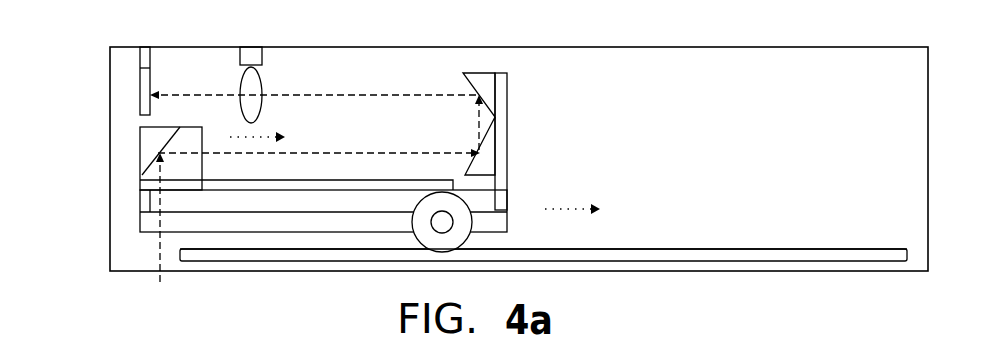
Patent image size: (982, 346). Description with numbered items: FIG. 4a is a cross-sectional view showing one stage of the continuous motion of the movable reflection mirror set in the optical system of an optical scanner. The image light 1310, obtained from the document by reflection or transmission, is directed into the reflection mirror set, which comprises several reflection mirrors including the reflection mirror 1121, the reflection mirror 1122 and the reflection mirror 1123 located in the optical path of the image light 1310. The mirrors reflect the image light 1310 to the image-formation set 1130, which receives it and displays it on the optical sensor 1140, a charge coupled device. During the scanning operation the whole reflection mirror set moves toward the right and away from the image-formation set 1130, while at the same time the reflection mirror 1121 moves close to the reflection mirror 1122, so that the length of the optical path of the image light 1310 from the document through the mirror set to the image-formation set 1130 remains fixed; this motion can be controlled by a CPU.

The image light 1310 is at (160, 250).
The optical sensor 1140 is at (143, 80).
The image-formation set 1130 is at (248, 83).
The reflection mirror 1121 is at (150, 160).
The reflection mirror 1123 is at (482, 80).
The reflection mirror 1122 is at (488, 160).